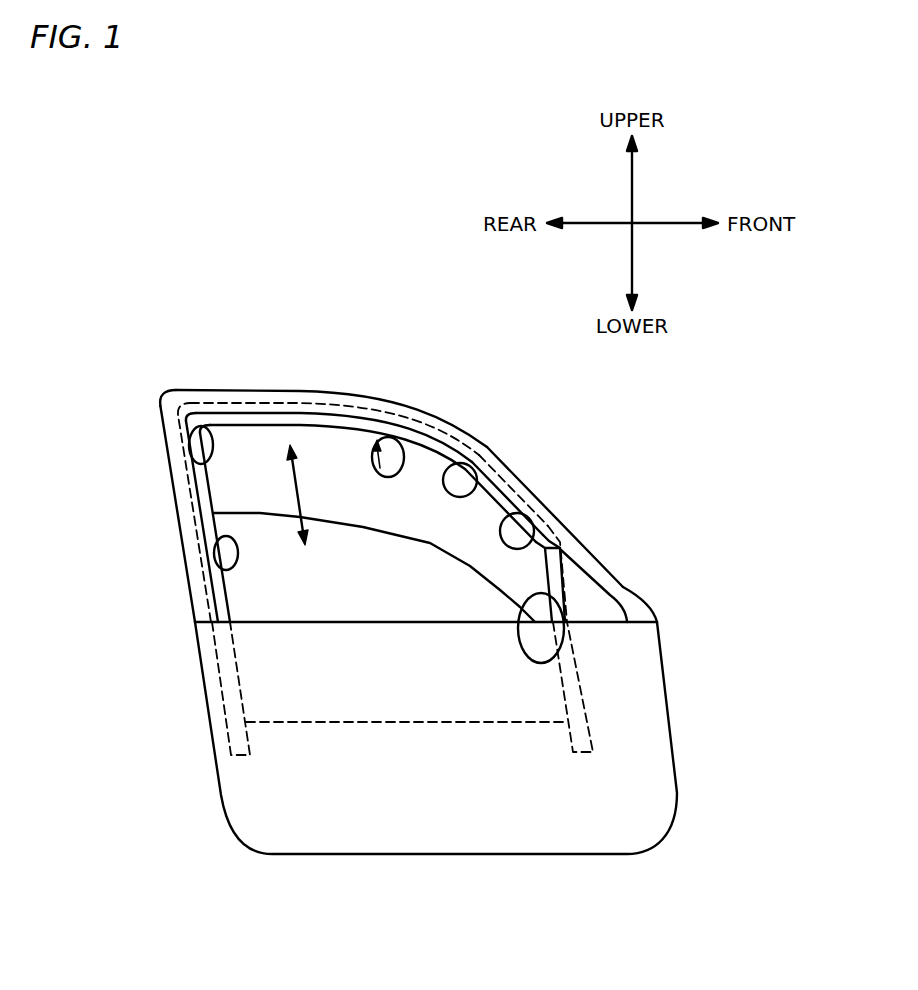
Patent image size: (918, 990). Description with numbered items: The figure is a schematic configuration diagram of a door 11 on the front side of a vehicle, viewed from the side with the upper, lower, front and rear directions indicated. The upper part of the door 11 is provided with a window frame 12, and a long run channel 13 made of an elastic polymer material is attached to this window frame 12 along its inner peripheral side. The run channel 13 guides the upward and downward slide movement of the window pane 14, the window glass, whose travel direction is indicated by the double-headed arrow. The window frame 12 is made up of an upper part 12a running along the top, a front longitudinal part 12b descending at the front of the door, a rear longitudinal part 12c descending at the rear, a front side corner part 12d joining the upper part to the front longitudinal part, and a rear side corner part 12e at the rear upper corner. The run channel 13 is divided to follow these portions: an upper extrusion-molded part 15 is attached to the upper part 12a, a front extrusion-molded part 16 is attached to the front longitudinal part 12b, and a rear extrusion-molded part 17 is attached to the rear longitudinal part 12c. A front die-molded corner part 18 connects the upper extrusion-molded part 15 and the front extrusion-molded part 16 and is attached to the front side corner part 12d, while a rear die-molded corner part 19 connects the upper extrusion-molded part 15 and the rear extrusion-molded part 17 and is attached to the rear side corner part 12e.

The door 11 is at (202, 681).
The window frame 12 is at (384, 454).
The upper part of the window frame 12a is at (364, 412).
The front longitudinal part of the window frame 12b is at (573, 600).
The rear longitudinal part of the window frame 12c is at (193, 513).
The front side corner part of the window frame 12d is at (554, 511).
The rear side corner part of the window frame 12e is at (164, 390).
The run channel 13 is at (406, 472).
The window pane 14 is at (338, 516).
The upper extrusion-molded part 15 is at (477, 492).
The front extrusion-molded part 16 is at (548, 663).
The rear extrusion-molded part 17 is at (236, 569).
The front die-molded corner part 18 is at (500, 540).
The rear die-molded corner part 19 is at (212, 454).